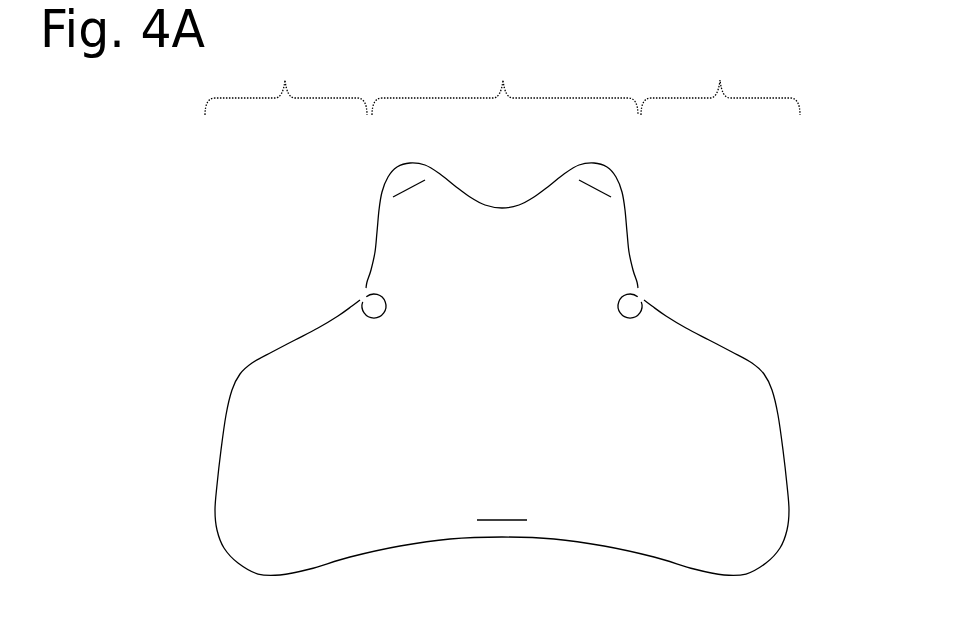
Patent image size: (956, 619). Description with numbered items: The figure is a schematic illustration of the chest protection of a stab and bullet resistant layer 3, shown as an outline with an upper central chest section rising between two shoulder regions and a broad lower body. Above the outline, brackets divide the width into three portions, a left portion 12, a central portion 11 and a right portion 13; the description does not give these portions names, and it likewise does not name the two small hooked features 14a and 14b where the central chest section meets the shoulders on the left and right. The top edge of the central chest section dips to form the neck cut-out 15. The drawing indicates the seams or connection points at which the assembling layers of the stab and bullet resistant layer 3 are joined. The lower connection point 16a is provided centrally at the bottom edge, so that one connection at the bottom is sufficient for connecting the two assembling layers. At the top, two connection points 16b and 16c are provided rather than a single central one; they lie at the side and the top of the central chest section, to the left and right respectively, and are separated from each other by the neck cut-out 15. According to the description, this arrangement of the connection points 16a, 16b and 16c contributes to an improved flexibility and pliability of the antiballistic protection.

The stab and bullet resistant layer 3 is at (529, 354).
The central portion 11 is at (505, 82).
The left side portion 12 is at (286, 82).
The right side portion 13 is at (720, 82).
The left hook 14a is at (352, 284).
The right hook 14b is at (652, 281).
The neck cut-out 15 is at (496, 186).
The lower connection point 16a is at (503, 520).
The connection point 16b is at (396, 189).
The connection point 16c is at (608, 189).